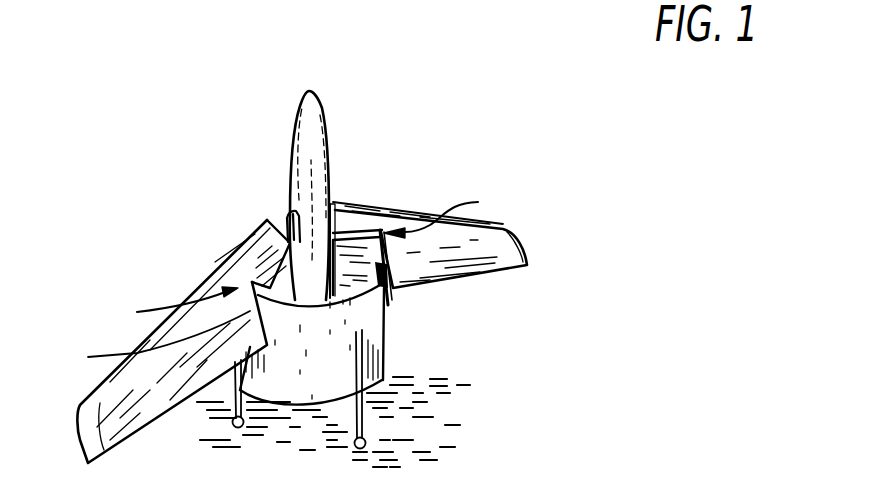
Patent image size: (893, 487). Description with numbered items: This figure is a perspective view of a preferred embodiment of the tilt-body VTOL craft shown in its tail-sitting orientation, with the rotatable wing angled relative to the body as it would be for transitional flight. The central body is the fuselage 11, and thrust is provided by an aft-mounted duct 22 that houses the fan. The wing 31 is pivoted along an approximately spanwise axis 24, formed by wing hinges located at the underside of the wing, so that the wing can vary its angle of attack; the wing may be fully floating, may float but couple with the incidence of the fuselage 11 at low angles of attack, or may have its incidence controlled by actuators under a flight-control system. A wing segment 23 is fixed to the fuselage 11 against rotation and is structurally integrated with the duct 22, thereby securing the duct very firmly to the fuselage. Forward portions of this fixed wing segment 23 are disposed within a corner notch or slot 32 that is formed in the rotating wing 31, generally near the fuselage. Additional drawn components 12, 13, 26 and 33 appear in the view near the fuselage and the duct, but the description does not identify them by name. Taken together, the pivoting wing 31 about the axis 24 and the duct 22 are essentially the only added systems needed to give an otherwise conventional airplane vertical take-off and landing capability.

The fuselage 11 is at (310, 132).
The left retaining clip 12 is at (290, 213).
The right retaining strip 13 is at (321, 242).
The duct 22 is at (363, 333).
The wing segment 23 is at (281, 291).
The spanwise axis 24 is at (303, 259).
The support legs 26 is at (234, 426).
The wing 31 is at (80, 407).
The corner notch or slot 32 is at (387, 265).
The flap top edge 33 is at (200, 284).